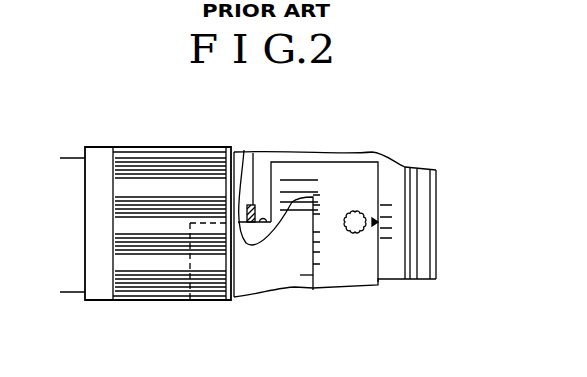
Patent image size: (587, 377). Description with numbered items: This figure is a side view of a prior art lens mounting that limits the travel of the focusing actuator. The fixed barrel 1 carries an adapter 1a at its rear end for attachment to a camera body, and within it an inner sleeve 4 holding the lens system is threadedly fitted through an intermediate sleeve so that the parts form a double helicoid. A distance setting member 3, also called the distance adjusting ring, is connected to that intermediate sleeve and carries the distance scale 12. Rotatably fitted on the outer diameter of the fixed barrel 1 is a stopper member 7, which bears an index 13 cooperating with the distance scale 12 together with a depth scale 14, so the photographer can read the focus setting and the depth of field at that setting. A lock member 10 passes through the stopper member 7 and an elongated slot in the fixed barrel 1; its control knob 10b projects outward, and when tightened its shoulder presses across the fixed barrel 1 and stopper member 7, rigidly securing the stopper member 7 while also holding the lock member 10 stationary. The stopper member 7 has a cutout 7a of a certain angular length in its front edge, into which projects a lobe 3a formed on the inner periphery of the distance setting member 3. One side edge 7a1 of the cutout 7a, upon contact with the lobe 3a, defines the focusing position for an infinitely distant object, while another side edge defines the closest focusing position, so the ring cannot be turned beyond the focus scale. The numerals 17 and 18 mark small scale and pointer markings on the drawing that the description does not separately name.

The fixed barrel 1 is at (395, 175).
The adapter 1a is at (423, 200).
The distance setting member 3 is at (155, 165).
The lobe 3a is at (252, 205).
The inner sleeve 4 is at (72, 168).
The stopper member 7 is at (348, 175).
The cutout 7a is at (276, 202).
The side edge of cutout 7a1 is at (263, 228).
The lock member 10 is at (352, 236).
The control knob 10b is at (358, 212).
The distance scale 12 is at (306, 278).
The index 13 is at (333, 177).
The depth scale 14 is at (335, 272).
The distance scale 17 is at (397, 222).
The pointer 18 is at (376, 228).